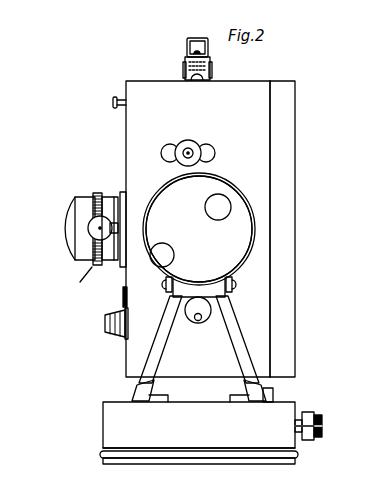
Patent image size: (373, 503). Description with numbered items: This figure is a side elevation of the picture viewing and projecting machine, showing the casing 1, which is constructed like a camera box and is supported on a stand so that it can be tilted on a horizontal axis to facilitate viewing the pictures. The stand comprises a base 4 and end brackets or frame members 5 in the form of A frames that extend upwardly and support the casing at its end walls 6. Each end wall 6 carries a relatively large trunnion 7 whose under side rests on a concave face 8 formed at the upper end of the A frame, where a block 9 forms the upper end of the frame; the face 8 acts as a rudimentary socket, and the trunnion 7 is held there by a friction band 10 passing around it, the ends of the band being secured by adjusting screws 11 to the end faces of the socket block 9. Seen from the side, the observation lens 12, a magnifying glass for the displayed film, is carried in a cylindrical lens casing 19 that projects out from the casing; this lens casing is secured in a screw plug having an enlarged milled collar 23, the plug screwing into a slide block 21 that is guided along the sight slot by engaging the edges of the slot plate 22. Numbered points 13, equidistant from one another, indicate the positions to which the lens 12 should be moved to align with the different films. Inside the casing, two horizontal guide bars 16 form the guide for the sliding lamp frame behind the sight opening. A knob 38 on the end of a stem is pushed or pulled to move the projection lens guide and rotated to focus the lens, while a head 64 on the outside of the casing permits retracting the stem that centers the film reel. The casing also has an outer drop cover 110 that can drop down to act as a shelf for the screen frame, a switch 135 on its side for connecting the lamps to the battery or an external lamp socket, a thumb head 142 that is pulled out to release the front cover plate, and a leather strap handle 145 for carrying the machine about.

The casing 1 is at (203, 380).
The base 4 is at (112, 417).
The end brackets or frame members 5 is at (230, 339).
The end walls 6 is at (127, 359).
The trunnions 7 is at (238, 218).
The concave face 8 is at (202, 282).
The block 9 is at (224, 298).
The friction band 10 is at (162, 190).
The adjusting screws 11 is at (165, 291).
The observation lens 12 is at (68, 232).
The numbered points 13 is at (125, 179).
The horizontal guide bars 16 is at (163, 249).
The lens casing 19 is at (83, 198).
The slide block 21 is at (113, 197).
The slot plate 22 is at (126, 272).
The milled collar 23 is at (74, 284).
The knob 38 is at (217, 200).
The head 64 is at (188, 140).
The drop cover 110 is at (278, 99).
The switch 135 is at (105, 325).
The thumb head 142 is at (113, 101).
The leather strap handle 145 is at (187, 47).